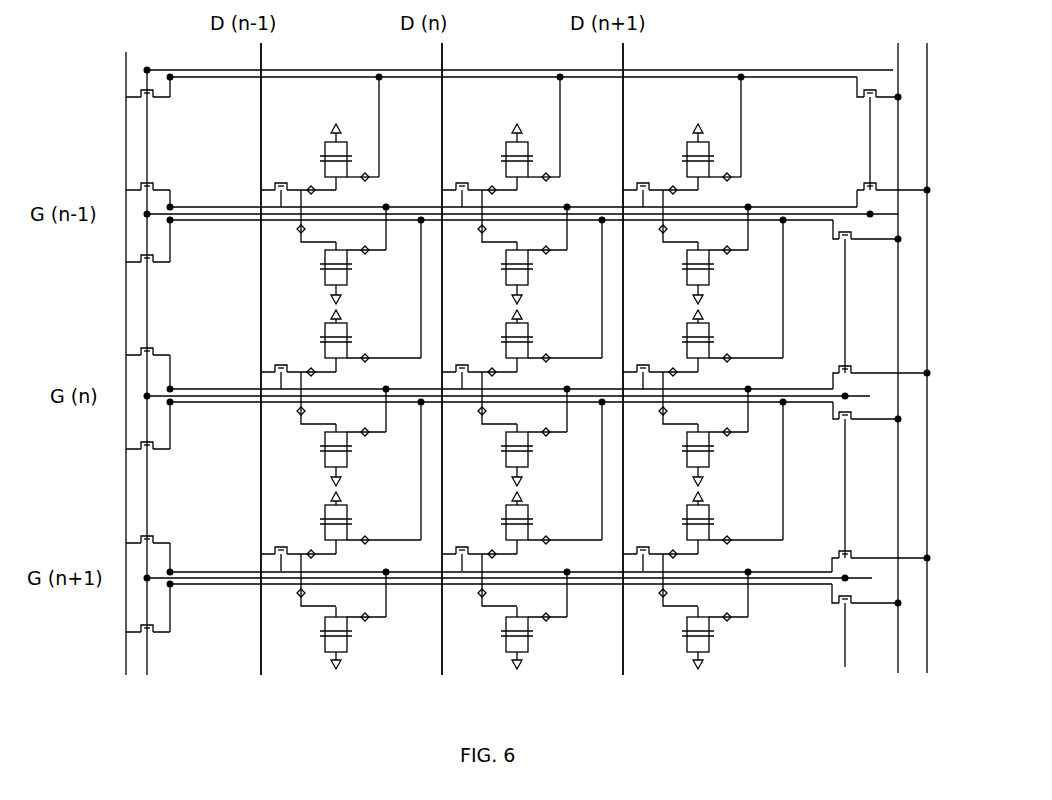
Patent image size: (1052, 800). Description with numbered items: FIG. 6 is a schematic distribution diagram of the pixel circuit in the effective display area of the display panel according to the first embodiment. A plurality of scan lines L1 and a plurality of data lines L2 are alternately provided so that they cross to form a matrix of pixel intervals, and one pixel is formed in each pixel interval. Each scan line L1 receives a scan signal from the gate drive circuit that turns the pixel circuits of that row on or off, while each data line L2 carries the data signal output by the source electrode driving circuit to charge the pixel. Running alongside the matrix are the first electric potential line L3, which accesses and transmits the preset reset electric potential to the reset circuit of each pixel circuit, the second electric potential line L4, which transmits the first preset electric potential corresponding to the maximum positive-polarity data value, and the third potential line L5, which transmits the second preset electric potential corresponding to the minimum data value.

The scan line L1 is at (535, 325).
The data line L2 is at (437, 372).
The first electric potential line L3 is at (122, 352).
The second electric potential line L4 is at (895, 346).
The third potential line L5 is at (924, 346).